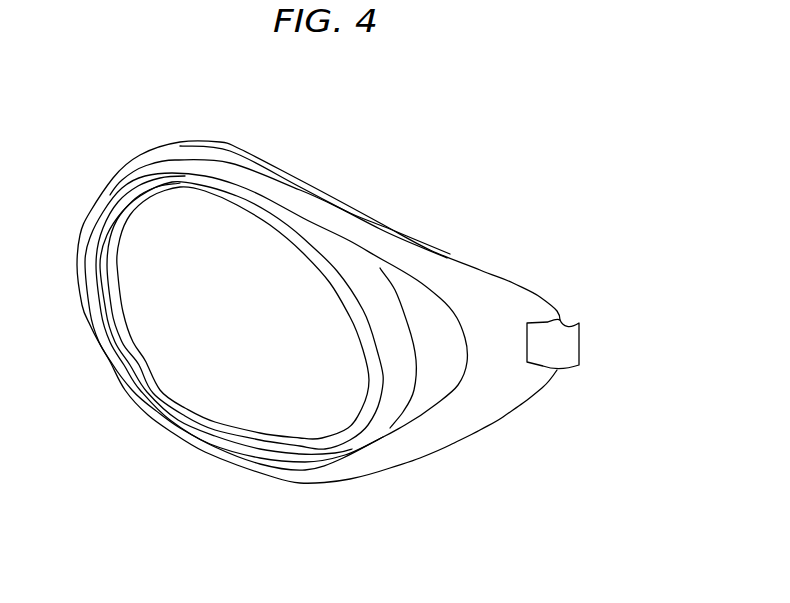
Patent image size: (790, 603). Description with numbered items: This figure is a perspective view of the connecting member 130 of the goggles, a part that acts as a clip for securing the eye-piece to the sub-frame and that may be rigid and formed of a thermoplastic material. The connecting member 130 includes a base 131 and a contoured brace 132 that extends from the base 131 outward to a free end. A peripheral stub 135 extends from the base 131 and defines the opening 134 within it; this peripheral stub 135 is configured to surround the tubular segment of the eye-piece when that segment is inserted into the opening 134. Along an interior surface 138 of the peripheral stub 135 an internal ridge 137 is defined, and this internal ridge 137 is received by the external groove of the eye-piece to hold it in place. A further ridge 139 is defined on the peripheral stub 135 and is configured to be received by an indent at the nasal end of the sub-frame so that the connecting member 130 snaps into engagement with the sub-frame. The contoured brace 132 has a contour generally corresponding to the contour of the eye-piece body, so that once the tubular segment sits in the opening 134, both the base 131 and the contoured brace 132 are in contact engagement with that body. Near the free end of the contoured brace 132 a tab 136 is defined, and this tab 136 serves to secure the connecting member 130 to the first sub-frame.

The connecting member 130 is at (340, 91).
The base 131 is at (259, 158).
The contoured brace 132 is at (495, 308).
The opening 134 is at (278, 347).
The peripheral stub 135 is at (333, 245).
The tab 136 is at (571, 353).
The internal ridge 137 is at (150, 386).
The interior surface 138 is at (176, 425).
The ridge 139 is at (84, 219).